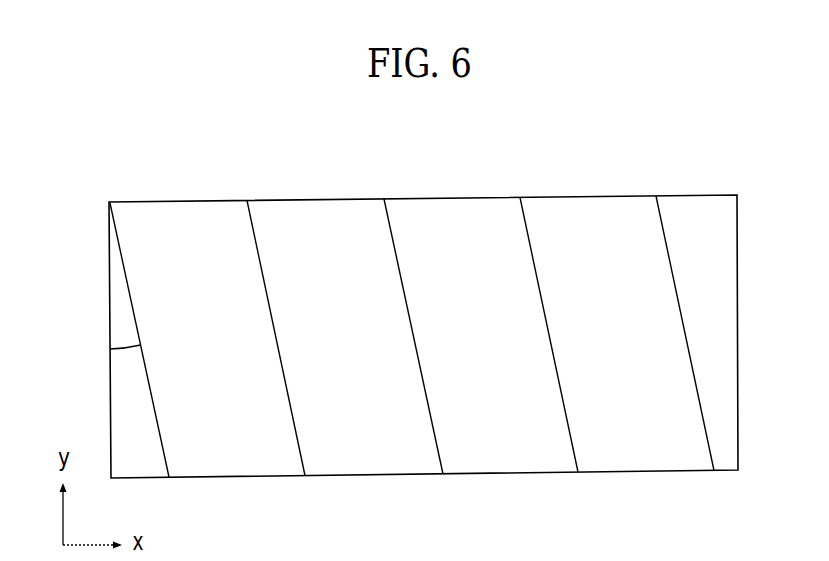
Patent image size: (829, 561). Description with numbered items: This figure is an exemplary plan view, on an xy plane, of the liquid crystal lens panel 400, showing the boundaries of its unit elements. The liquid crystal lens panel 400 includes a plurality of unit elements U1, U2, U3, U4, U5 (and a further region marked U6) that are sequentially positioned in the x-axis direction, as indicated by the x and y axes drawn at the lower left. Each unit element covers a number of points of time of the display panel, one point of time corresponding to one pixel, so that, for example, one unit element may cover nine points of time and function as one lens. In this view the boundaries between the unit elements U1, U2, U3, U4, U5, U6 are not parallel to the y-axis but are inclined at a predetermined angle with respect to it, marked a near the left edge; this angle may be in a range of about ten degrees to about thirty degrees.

The liquid crystal lens panel 400 is at (441, 198).
The unit element U1 is at (139, 340).
The unit element U2 is at (251, 338).
The unit element U3 is at (389, 336).
The unit element U4 is at (523, 335).
The unit element U5 is at (659, 333).
The sixth unit region U6 is at (712, 331).